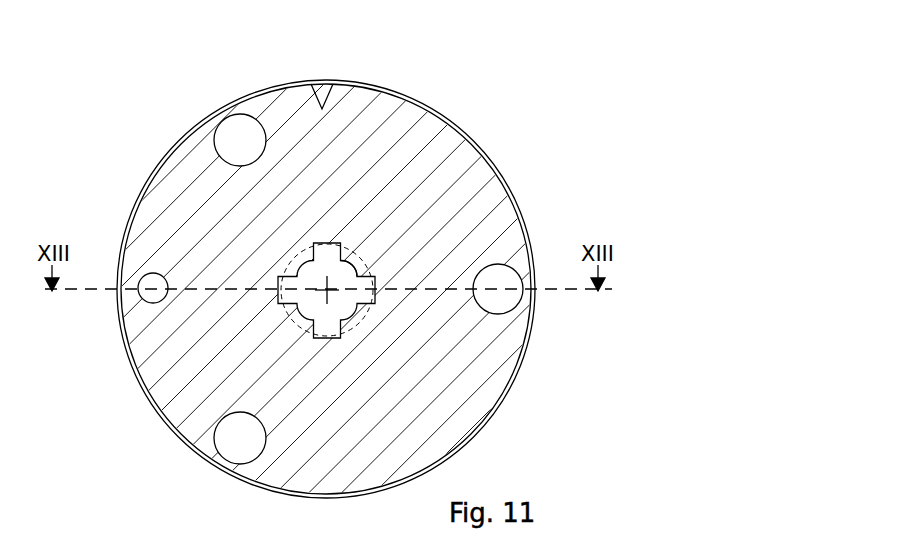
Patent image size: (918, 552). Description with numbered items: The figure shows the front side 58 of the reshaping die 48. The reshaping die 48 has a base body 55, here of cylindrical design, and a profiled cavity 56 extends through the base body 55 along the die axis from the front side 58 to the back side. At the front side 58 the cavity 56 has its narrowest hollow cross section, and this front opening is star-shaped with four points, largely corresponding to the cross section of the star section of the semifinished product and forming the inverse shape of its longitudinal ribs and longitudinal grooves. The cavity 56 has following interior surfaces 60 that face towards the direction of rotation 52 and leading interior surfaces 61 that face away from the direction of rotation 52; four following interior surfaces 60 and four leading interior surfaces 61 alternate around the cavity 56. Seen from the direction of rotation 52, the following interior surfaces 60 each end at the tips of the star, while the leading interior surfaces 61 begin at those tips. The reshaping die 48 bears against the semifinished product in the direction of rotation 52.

The reshaping die 48 is at (104, 50).
The direction of rotation 52 is at (236, 78).
The base body 55 is at (275, 202).
The profiled cavity 56 is at (286, 292).
The front side 58 is at (327, 150).
The following interior surfaces 60 is at (345, 263).
The leading interior surfaces 61 is at (308, 264).